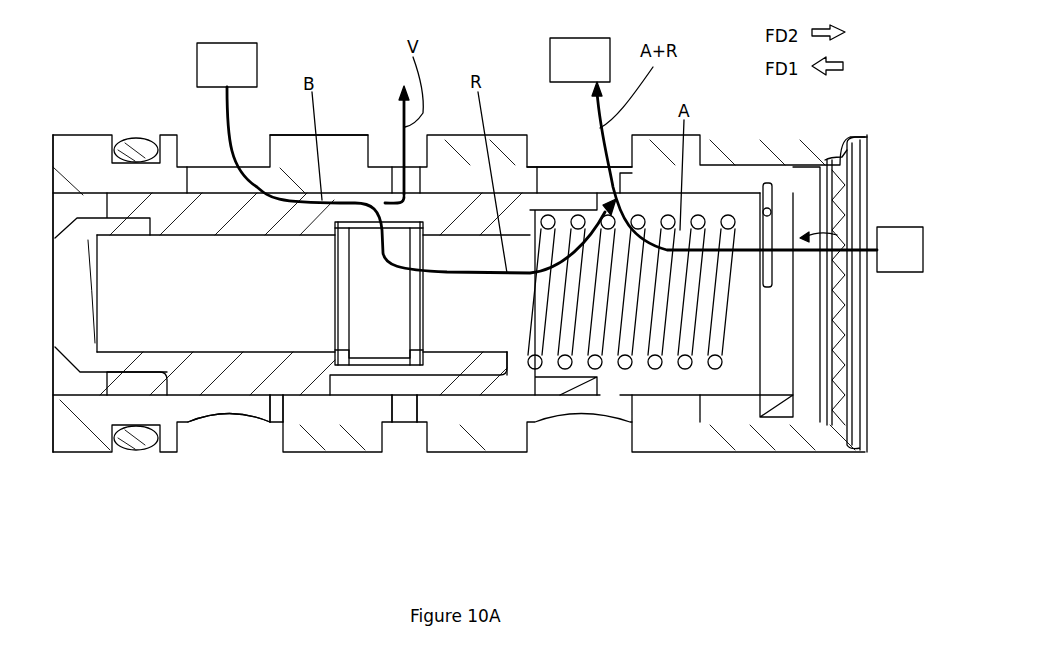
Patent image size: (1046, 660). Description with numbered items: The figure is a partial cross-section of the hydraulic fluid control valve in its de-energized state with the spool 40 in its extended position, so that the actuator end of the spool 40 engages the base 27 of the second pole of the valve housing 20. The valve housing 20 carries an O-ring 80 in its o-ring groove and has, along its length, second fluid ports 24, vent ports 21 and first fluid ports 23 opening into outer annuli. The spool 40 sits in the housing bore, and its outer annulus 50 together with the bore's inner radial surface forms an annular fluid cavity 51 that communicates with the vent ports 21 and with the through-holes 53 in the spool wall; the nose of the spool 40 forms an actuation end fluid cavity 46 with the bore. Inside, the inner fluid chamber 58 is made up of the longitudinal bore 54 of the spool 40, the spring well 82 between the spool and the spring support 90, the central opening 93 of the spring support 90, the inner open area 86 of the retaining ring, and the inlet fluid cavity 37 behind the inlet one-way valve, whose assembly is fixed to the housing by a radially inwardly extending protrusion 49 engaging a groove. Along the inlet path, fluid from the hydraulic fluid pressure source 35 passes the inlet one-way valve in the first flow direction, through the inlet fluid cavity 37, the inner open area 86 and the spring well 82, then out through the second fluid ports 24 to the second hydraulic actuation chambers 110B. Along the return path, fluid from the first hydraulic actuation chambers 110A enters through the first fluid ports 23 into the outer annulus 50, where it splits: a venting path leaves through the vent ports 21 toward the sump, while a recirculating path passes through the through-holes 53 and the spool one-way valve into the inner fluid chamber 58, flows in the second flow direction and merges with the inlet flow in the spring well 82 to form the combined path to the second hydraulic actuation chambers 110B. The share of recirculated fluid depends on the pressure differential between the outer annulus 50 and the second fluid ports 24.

The valve housing 20 is at (368, 140).
The vent ports 21 is at (403, 410).
The first fluid ports 23 is at (200, 182).
The second fluid ports 24 is at (550, 180).
The base of the second pole 27 is at (82, 195).
The hydraulic fluid pressure source 35 is at (861, 249).
The inlet fluid cavity 37 is at (803, 385).
The spool 40 is at (227, 380).
The actuation end fluid cavity 46 is at (138, 397).
The radially inwardly extending protrusion 49 is at (764, 180).
The outer annulus 50 is at (463, 387).
The annular fluid cavity 51 is at (300, 383).
The through-holes 53 is at (362, 380).
The longitudinal bore 54 is at (515, 340).
The inner fluid chamber 58 is at (712, 311).
The O-ring 80 is at (132, 442).
The spring well 82 is at (668, 378).
The inner open area 86 is at (798, 160).
The spring support 90 is at (747, 387).
The central opening 93 is at (752, 320).
The first hydraulic actuation chambers 110A is at (406, 158).
The second hydraulic actuation chambers 110B is at (713, 144).